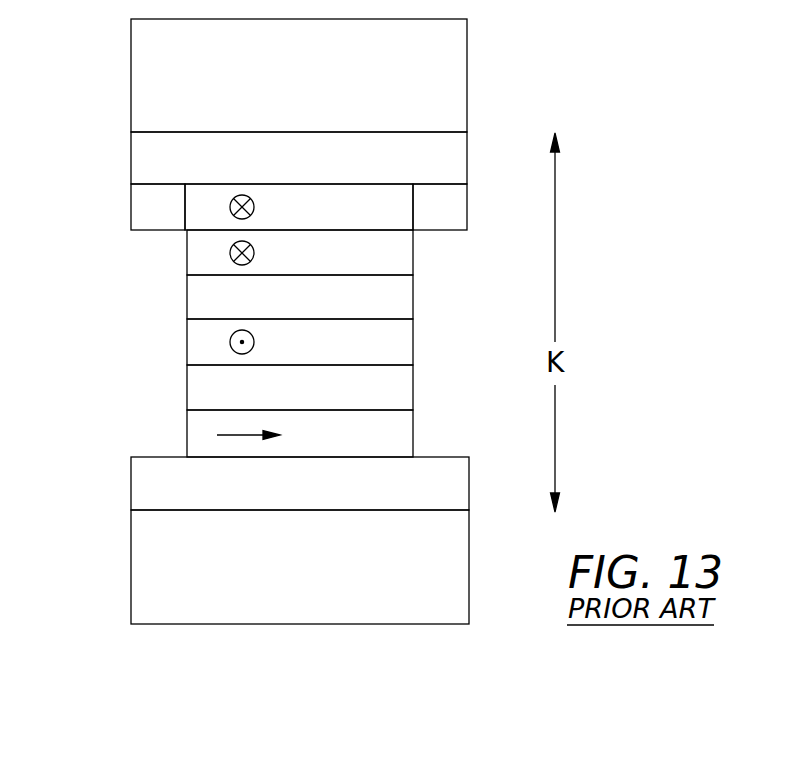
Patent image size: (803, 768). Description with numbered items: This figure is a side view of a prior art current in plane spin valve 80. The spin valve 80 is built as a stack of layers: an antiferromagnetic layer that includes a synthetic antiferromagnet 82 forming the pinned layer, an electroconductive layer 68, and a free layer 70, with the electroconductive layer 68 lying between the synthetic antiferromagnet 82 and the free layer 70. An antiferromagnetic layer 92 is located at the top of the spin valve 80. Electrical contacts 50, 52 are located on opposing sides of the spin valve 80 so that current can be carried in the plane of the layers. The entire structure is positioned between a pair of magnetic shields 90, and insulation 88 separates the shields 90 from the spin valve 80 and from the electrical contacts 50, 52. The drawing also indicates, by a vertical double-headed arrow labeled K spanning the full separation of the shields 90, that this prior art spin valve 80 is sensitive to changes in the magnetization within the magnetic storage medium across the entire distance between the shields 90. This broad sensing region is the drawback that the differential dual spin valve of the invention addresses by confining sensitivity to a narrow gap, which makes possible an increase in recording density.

The magnetic shield 90 is at (313, 97).
The insulation 88 is at (313, 170).
The electrical contact 50 is at (169, 220).
The electrical contact 52 is at (454, 220).
The antiferromagnetic layer 92 is at (389, 220).
The synthetic antiferromagnet 82 is at (413, 230).
The electroconductive layer 68 is at (391, 405).
The free layer 70 is at (391, 450).
The current in plane (CIP) spin valve 80 is at (135, 321).